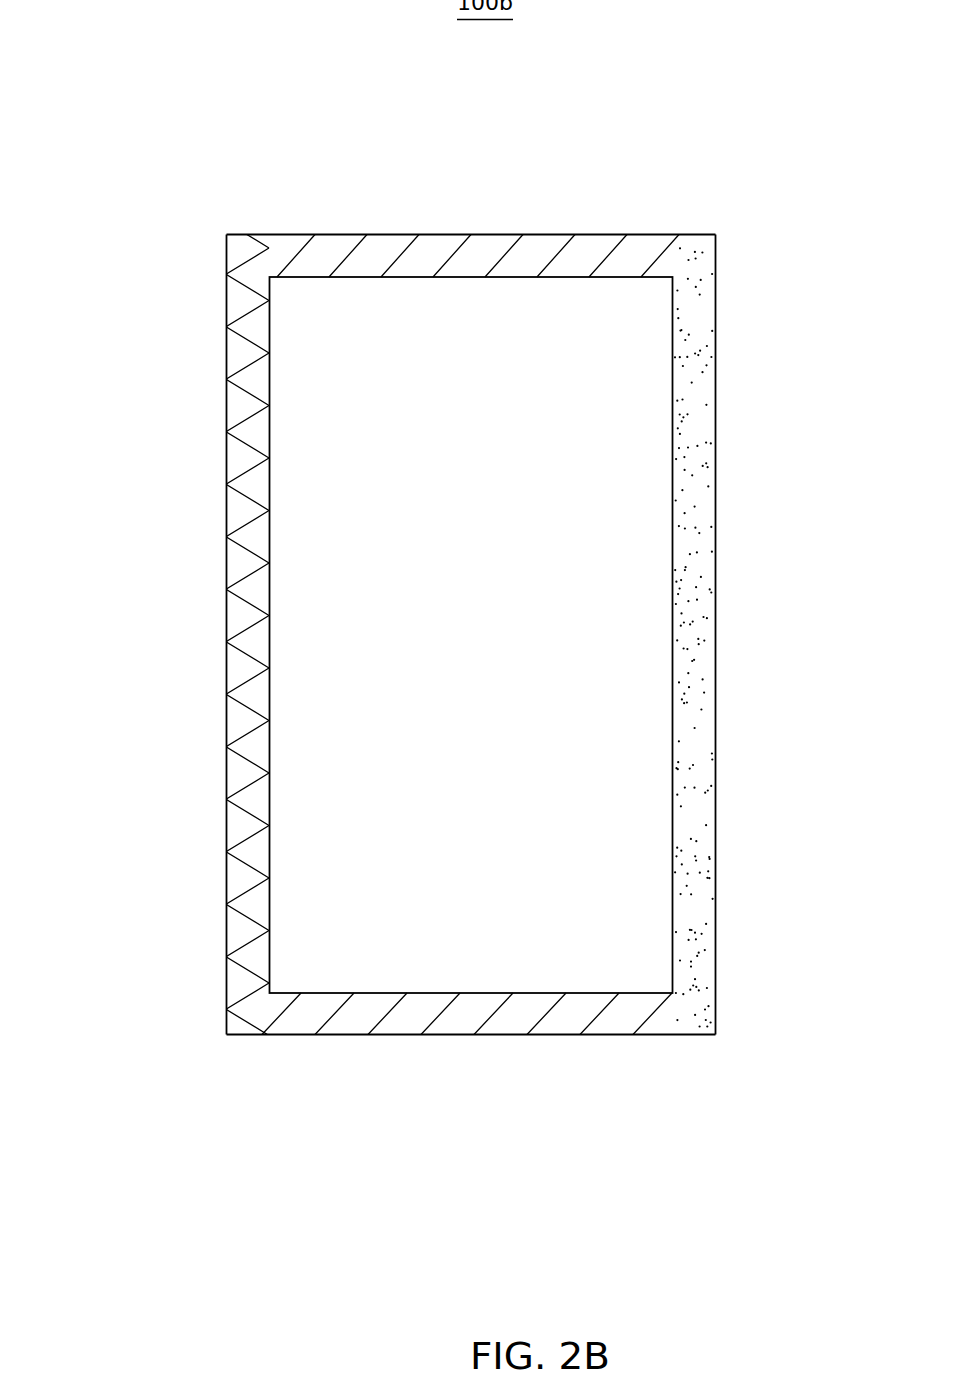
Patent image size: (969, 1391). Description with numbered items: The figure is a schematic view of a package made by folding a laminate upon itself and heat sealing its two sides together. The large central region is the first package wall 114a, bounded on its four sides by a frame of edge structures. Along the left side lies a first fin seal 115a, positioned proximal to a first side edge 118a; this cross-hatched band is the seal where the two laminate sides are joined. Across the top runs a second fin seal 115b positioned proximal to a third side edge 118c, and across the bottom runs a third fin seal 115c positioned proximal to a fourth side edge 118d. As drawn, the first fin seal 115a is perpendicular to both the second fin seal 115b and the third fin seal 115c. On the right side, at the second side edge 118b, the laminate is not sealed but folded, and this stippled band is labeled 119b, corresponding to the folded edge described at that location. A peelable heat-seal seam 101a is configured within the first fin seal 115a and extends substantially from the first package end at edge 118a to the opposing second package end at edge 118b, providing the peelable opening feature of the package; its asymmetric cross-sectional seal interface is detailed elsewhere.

The peelable heat-seal seam 101a is at (245, 505).
The first package wall 114a is at (612, 390).
The first fin seal 115a is at (240, 670).
The second fin seal 115b is at (593, 248).
The third fin seal 115c is at (360, 1018).
The first side edge 118a is at (226, 886).
The second side edge 118b is at (716, 674).
The third side edge 118c is at (398, 234).
The fourth side edge 118d is at (564, 1035).
The fourth wall 119b is at (695, 520).